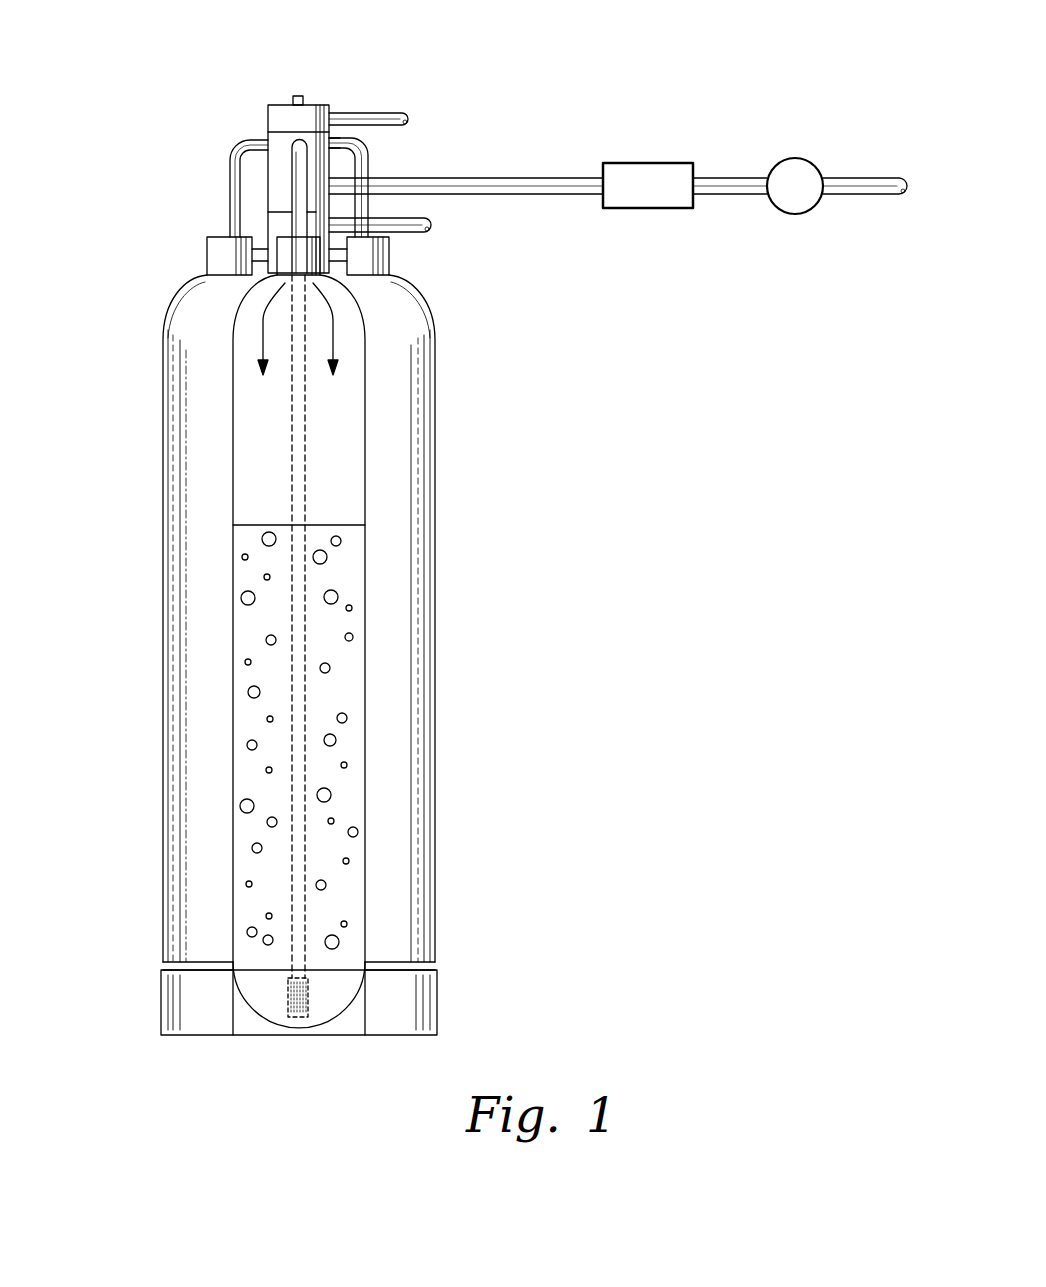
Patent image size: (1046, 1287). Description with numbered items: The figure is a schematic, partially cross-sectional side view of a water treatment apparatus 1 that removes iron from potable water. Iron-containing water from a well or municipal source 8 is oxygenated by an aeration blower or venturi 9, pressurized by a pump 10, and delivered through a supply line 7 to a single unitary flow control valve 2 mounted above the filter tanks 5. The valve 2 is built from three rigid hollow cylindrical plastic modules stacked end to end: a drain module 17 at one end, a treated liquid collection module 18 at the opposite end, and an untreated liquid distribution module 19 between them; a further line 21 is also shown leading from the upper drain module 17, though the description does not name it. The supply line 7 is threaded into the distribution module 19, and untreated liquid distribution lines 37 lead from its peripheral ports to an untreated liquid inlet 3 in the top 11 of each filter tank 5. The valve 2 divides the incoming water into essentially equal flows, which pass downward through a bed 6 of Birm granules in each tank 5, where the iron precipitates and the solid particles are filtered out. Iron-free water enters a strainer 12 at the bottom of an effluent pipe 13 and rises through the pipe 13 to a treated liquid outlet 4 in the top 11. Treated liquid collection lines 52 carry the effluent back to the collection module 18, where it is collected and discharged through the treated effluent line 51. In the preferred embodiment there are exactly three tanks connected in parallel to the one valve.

The apparatus 1 is at (108, 160).
The flow control valve 2 is at (248, 110).
The untreated liquid inlet 3 is at (195, 308).
The treated liquid outlet 4 is at (217, 243).
The filter tank 5 is at (397, 370).
The bed 6 is at (327, 643).
The supply line 7 is at (551, 178).
The well or municipal source 8 is at (900, 196).
The aeration blower or venturi 9 is at (660, 163).
The pump 10 is at (815, 162).
The top 11 is at (290, 255).
The strainer 12 is at (313, 1003).
The effluent pipe 13 is at (298, 483).
The drain module 17 is at (280, 105).
The treated liquid collection module 18 is at (277, 223).
The untreated liquid distribution module 19 is at (330, 137).
The upper pipe 21 is at (392, 113).
The untreated liquid distribution lines 37 is at (307, 143).
The treated effluent line 51 is at (420, 233).
The treated liquid collection lines 52 is at (257, 255).